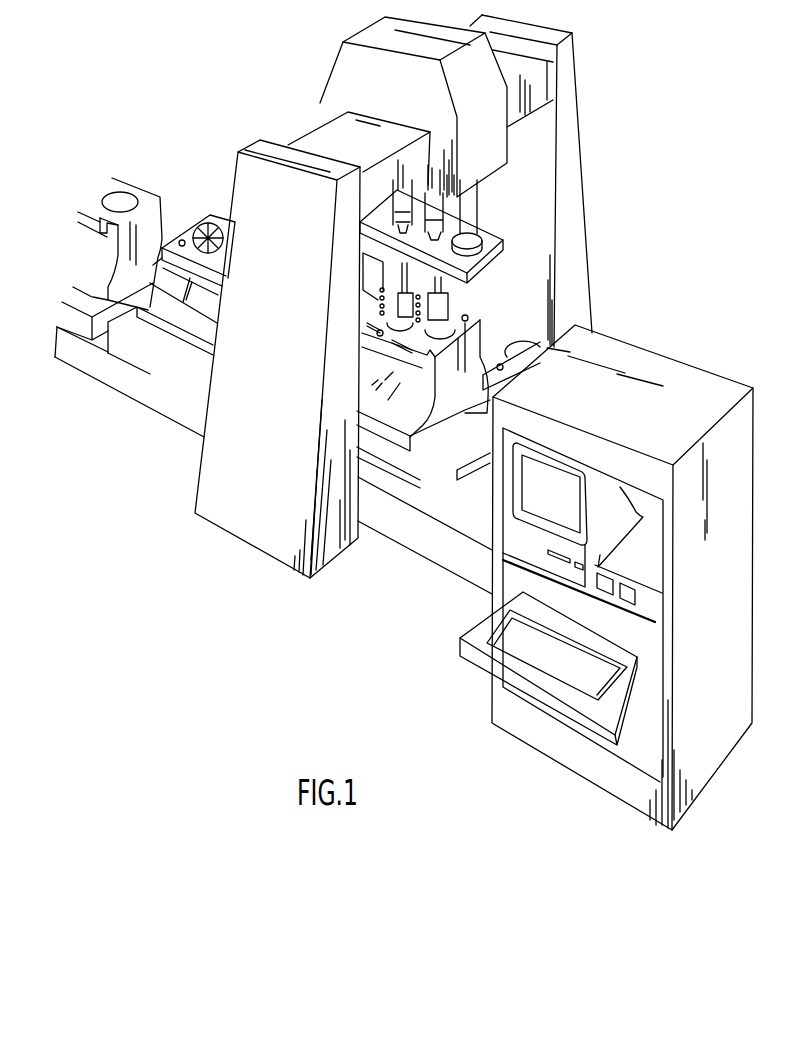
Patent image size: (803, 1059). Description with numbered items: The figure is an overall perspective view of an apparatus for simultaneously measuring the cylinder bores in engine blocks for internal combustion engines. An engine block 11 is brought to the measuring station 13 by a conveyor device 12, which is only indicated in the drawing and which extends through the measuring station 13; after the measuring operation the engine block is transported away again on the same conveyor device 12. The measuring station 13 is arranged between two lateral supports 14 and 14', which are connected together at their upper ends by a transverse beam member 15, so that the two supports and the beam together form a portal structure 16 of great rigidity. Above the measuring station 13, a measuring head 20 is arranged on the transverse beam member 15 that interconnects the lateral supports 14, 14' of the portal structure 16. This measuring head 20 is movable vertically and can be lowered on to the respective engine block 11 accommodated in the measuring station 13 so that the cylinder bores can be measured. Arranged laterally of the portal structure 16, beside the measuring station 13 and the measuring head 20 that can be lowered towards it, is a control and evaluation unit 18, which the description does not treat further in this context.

The engine block 11 is at (482, 338).
The conveyor device 12 is at (460, 560).
The measuring station 13 is at (158, 353).
The lateral support 14 is at (548, 181).
The lateral support 14' is at (269, 359).
The transverse beam member 15 is at (367, 125).
The portal structure 16 is at (577, 60).
The control and evaluation unit 18 is at (663, 355).
The measuring head 20 is at (482, 230).